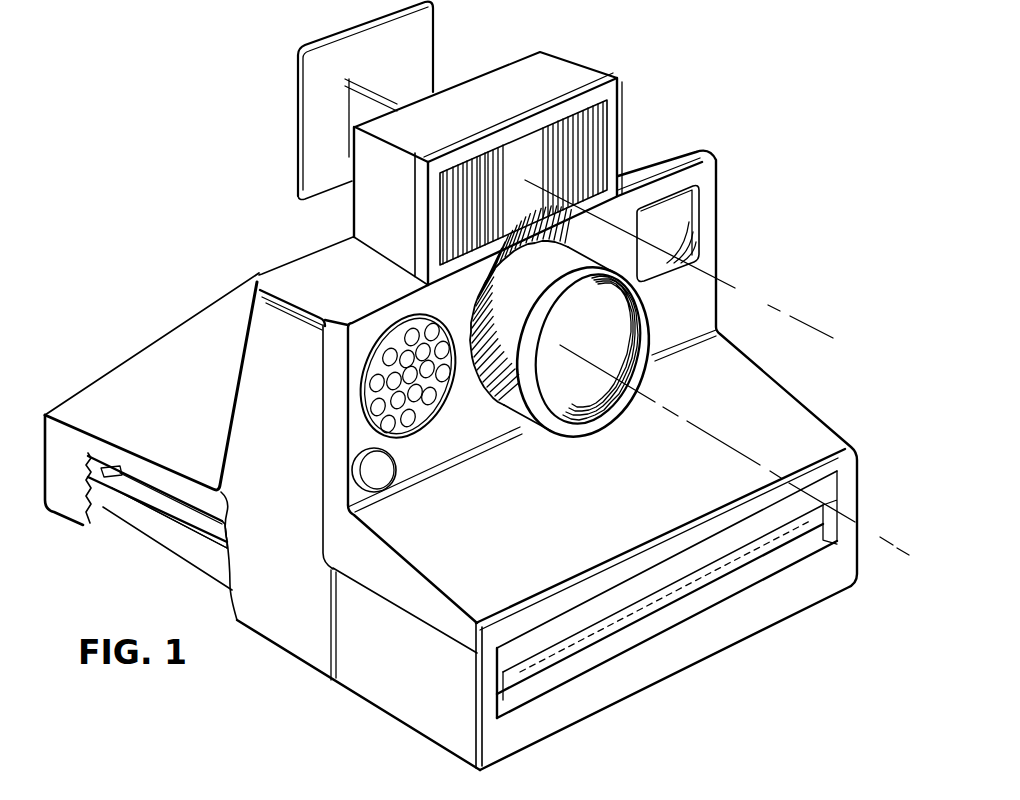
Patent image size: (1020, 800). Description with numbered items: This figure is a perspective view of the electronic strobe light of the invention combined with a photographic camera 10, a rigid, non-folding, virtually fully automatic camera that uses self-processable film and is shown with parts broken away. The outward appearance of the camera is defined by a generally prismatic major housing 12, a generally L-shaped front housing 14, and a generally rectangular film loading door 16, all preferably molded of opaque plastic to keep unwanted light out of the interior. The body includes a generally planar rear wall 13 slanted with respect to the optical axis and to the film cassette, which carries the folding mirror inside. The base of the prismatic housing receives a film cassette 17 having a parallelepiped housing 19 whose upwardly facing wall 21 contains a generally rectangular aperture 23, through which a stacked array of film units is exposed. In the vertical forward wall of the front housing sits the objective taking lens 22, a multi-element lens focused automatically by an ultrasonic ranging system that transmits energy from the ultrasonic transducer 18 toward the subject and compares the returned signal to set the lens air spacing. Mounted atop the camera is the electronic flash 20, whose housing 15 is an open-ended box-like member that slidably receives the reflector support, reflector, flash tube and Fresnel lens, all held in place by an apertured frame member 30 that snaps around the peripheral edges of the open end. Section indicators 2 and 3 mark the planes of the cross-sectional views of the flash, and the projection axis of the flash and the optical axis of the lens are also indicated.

The section line 2- 2 is at (447, 72).
The section line 3- 3 is at (410, 231).
The camera 10 is at (730, 198).
The major housing 12 is at (282, 256).
The rear wall 13 is at (167, 331).
The front housing 14 is at (318, 430).
The housing 15 is at (561, 52).
The film loading door 16 is at (397, 724).
The film cassette 17 is at (167, 560).
The ultrasonic transducer 18 is at (427, 413).
The parallelepiped housing 19 is at (150, 530).
The electronic flash 20 is at (592, 62).
The upwardly facing wall 21 is at (103, 507).
The objective taking lens 22 is at (577, 440).
The aperture 23 is at (222, 528).
The apertured frame member 30 is at (667, 635).